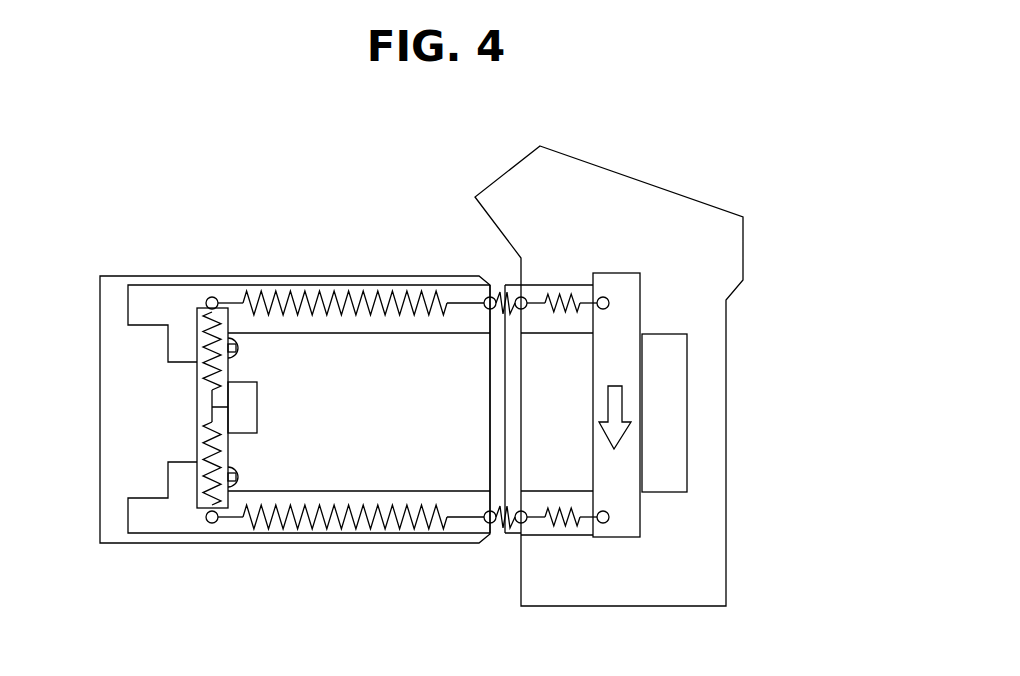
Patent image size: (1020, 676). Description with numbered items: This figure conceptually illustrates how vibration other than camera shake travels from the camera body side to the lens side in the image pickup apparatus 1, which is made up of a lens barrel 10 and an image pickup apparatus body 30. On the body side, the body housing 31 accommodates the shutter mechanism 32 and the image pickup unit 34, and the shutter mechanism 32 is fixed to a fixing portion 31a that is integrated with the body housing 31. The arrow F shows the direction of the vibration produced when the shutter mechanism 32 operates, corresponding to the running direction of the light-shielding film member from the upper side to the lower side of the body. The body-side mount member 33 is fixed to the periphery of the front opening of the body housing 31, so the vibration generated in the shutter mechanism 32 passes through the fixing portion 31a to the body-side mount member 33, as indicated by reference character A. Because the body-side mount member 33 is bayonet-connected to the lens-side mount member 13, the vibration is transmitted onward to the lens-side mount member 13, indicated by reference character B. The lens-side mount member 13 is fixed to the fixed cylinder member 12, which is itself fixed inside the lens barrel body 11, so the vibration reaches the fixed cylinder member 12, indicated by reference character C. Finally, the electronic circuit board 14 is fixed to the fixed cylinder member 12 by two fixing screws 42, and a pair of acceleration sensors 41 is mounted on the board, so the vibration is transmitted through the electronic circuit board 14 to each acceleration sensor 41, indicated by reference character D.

The image pickup apparatus 1 is at (110, 195).
The lens barrel 10 is at (272, 195).
The lens barrel body 11 is at (255, 533).
The fixed cylinder member 12 is at (352, 524).
The lens-side mount member 13 is at (499, 527).
The electronic circuit board 14 is at (196, 509).
The image pickup apparatus body 30 is at (753, 188).
The body housing 31 is at (726, 548).
The fixing portion 31a is at (580, 527).
The shutter mechanism 32 is at (625, 527).
The body-side mount member 33 is at (507, 527).
The image pickup unit 34 is at (670, 482).
The acceleration sensor 41 is at (253, 395).
The fixing screw 42 is at (237, 348).
The vibration transmission from shutter mechanism to body-side mount member A is at (557, 300).
The vibration transmission from body-side mount member to lens-side mount member B is at (503, 295).
The vibration transmission from lens-side mount member to fixed cylinder member C is at (398, 295).
The vibration transmission from fixed cylinder member to acceleration sensors D is at (203, 332).
The vibration direction arrow F is at (615, 405).